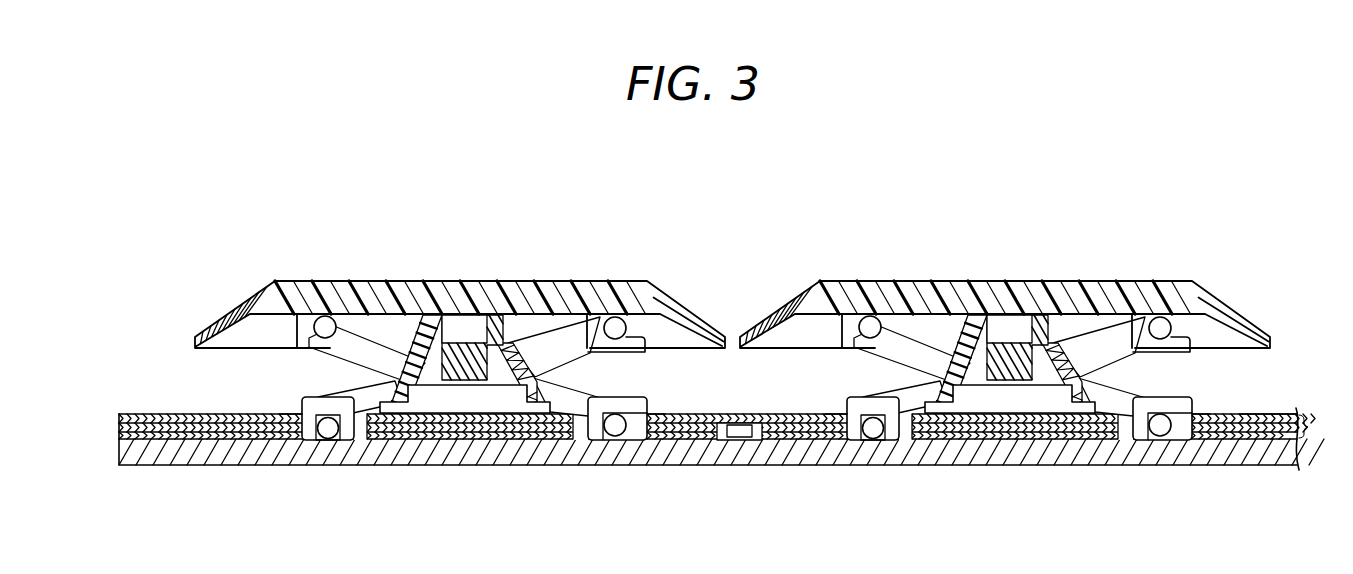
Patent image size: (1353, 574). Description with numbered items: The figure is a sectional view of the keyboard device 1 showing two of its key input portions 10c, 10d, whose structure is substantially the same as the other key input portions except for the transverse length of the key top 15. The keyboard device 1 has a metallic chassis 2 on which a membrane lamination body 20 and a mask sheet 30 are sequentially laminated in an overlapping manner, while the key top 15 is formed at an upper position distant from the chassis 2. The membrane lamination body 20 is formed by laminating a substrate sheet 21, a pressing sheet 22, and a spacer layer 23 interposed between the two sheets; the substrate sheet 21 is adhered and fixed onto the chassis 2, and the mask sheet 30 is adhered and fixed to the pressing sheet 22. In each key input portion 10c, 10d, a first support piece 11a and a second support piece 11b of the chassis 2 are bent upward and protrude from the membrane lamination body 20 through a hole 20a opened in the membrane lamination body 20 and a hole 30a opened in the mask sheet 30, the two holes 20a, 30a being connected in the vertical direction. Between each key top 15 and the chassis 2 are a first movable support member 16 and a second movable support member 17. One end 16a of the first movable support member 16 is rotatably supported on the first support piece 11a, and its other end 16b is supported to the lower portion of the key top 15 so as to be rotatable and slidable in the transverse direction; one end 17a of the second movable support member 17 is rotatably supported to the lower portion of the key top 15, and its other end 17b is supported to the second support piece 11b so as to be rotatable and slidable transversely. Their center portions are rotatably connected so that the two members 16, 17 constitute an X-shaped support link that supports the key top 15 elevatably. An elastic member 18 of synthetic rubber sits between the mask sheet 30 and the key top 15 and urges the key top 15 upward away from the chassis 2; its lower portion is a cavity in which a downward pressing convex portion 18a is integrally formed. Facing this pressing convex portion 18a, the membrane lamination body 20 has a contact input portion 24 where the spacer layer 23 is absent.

The keyboard device 1 is at (791, 218).
The chassis 2 is at (207, 452).
The key input portion 10c is at (577, 245).
The key input portion 10d is at (1118, 245).
The first support piece 11a is at (308, 407).
The second support piece 11b is at (640, 403).
The key top 15 is at (462, 335).
The first movable support member 16 is at (542, 347).
The one end of first movable support member 16a is at (328, 417).
The other end of first movable support member 16b is at (621, 323).
The second movable support member 17 is at (376, 346).
The one end of second movable support member 17a is at (328, 321).
The other end of second movable support member 17b is at (614, 414).
The elastic member 18 is at (420, 352).
The pressing convex portion 18a is at (468, 362).
The membrane lamination body 20 is at (1308, 426).
The hole 20a is at (361, 438).
The substrate sheet 21 is at (119, 437).
The pressing sheet 22 is at (119, 420).
The spacer layer 23 is at (119, 428).
The contact input portion 24 is at (458, 445).
The mask sheet 30 is at (1284, 410).
The hole 30a is at (293, 413).